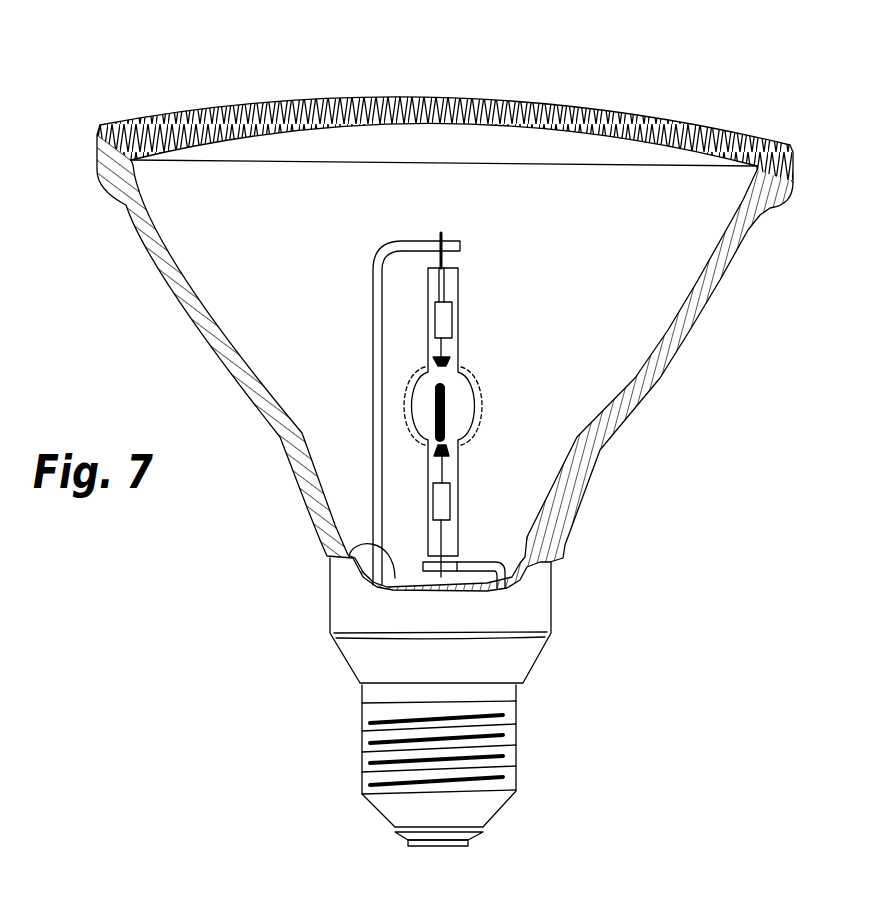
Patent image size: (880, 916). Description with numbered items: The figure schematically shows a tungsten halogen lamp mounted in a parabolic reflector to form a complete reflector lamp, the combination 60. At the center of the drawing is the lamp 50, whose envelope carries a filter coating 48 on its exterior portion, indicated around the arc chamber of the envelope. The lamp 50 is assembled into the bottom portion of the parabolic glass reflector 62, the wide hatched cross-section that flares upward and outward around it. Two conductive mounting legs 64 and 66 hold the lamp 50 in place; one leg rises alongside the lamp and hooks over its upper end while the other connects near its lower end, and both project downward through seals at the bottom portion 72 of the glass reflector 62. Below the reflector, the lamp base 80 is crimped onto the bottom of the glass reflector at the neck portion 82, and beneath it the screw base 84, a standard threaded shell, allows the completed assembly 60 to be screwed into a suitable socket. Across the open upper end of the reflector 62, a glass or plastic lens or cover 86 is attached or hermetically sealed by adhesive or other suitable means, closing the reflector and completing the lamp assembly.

The combination 60 is at (608, 78).
The lens or cover 86 is at (230, 107).
The parabolic glass reflector 62 is at (652, 393).
The conductive mounting leg 64 is at (373, 300).
The bottom portion 72 is at (345, 553).
The lamp 50 is at (487, 394).
The filter coating 48 is at (473, 428).
The conductive mounting leg 66 is at (475, 562).
The neck portion 82 is at (553, 592).
The lamp base 80 is at (614, 717).
The screw base 84 is at (512, 773).